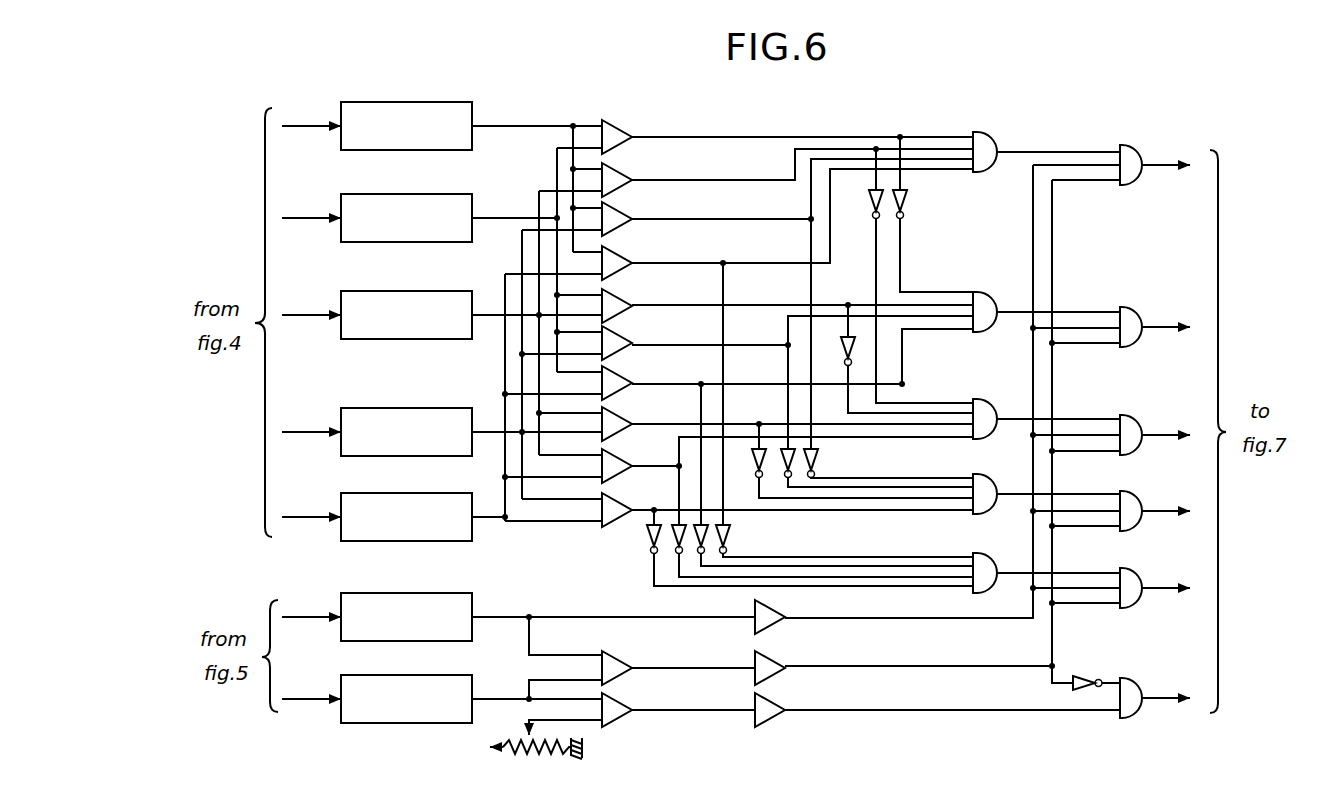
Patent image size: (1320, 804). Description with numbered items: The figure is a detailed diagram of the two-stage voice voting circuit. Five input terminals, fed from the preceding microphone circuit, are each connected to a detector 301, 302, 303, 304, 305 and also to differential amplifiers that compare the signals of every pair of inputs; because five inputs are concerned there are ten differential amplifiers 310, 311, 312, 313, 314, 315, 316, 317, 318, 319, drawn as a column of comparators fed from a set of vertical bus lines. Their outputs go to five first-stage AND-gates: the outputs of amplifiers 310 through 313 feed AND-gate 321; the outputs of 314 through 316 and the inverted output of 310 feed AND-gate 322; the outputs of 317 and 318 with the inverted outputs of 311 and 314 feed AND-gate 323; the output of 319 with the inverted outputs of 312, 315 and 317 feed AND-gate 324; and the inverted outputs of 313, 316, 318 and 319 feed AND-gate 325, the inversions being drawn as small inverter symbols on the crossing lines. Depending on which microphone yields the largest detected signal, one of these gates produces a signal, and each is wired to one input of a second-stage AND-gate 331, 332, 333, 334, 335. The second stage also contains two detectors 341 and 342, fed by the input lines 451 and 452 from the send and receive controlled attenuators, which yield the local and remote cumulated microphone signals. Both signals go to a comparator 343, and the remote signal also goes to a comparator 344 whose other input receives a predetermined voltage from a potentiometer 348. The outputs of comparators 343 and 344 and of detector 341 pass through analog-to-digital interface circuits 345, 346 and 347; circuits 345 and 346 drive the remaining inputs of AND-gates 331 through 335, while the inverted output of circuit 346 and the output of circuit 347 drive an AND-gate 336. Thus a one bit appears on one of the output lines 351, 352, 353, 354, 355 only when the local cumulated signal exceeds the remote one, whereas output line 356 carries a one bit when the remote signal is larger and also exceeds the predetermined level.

The detector 301 is at (410, 102).
The detector 302 is at (410, 194).
The detector 303 is at (410, 291).
The detector 304 is at (410, 408).
The detector 305 is at (410, 493).
The differential amplifier 310 is at (617, 130).
The differential amplifier 311 is at (617, 173).
The differential amplifier 312 is at (617, 212).
The differential amplifier 313 is at (617, 256).
The differential amplifier 314 is at (617, 299).
The differential amplifier 315 is at (617, 336).
The differential amplifier 316 is at (617, 376).
The differential amplifier 317 is at (617, 417).
The differential amplifier 318 is at (617, 459).
The differential amplifier 319 is at (617, 503).
The AND-gate 321 is at (990, 140).
The AND-gate 322 is at (992, 289).
The AND-gate 323 is at (992, 395).
The AND-gate 324 is at (992, 472).
The AND-gate 325 is at (992, 551).
The AND-gate 331 is at (1140, 155).
The AND-gate 332 is at (1140, 317).
The AND-gate 333 is at (1140, 422).
The AND-gate 334 is at (1140, 498).
The AND-gate 335 is at (1138, 572).
The AND-gate 336 is at (1140, 682).
The detector 341 is at (410, 593).
The detector 342 is at (410, 675).
The comparator 343 is at (617, 660).
The comparator 344 is at (617, 721).
The analog-to-digital interface circuit 345 is at (778, 615).
The analog-to-digital interface circuit 346 is at (778, 666).
The analog-to-digital interface circuit 347 is at (778, 708).
The potentiometer 348 is at (524, 750).
The output line 351 is at (1162, 167).
The output line 352 is at (1162, 329).
The output line 353 is at (1162, 437).
The output line 354 is at (1162, 513).
The output line 355 is at (1162, 590).
The output line 356 is at (1162, 700).
The input line from fig. 5 451 is at (302, 614).
The input line from fig. 5 452 is at (302, 696).